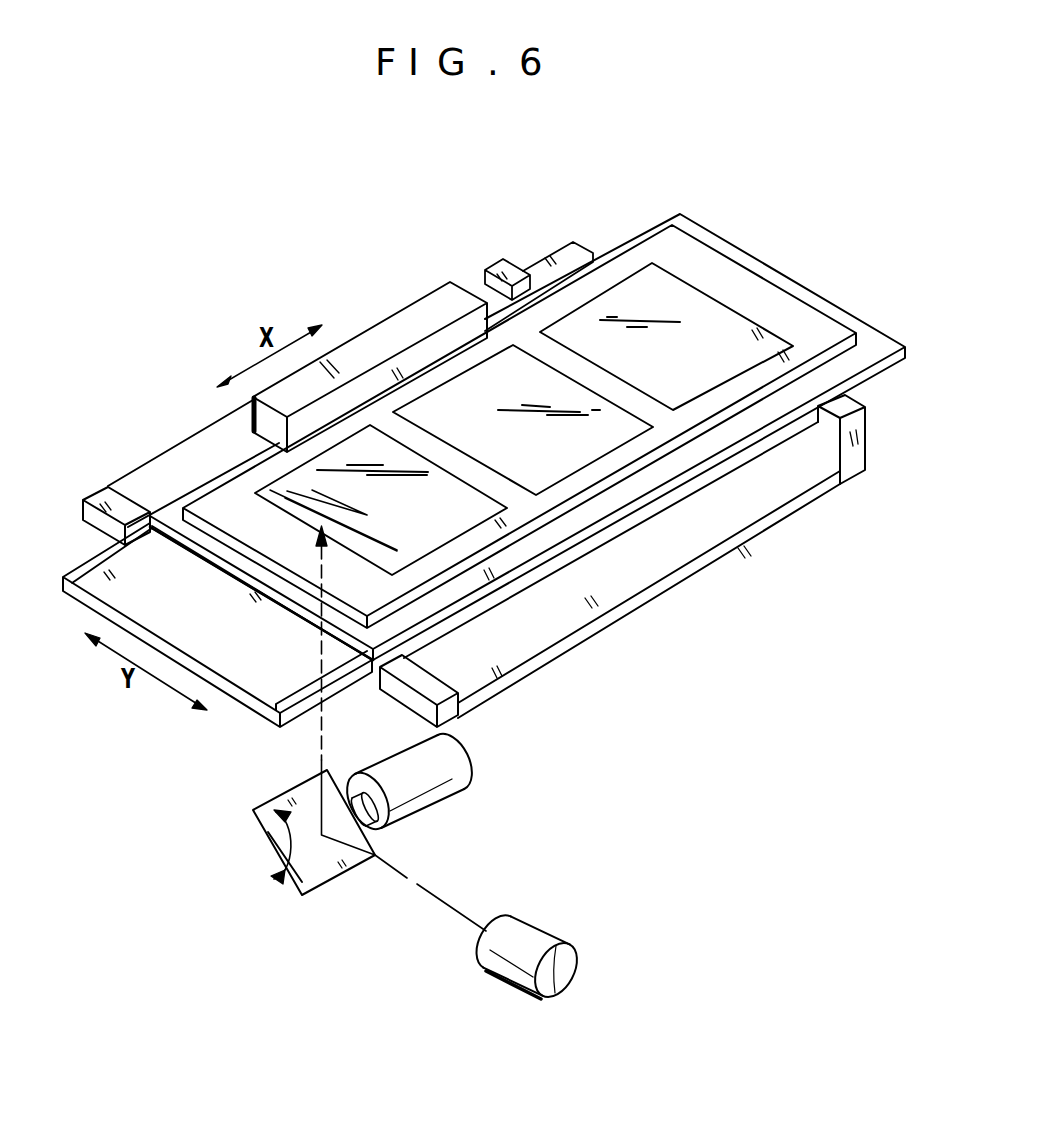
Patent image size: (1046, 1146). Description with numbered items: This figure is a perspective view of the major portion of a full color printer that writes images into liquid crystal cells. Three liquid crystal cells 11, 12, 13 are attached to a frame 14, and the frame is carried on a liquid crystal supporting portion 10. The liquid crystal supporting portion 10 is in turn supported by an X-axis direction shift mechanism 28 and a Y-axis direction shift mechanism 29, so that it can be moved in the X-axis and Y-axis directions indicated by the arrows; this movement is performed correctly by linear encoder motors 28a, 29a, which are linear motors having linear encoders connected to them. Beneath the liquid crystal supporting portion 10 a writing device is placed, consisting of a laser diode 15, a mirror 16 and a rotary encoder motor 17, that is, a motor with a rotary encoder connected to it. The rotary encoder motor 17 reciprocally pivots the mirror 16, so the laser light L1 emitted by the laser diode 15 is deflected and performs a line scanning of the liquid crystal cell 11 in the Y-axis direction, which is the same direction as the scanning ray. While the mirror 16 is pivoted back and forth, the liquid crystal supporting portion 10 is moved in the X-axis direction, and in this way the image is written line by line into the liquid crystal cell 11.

The liquid crystal supporting portion 10 is at (877, 344).
The liquid crystal cell 11 is at (312, 467).
The liquid crystal cell 12 is at (475, 378).
The liquid crystal cell 13 is at (612, 300).
The frame 14 is at (745, 262).
The laser diode 15 is at (545, 940).
The mirror 16 is at (346, 870).
The rotary encoder motor 17 is at (433, 796).
The X-axis direction shift mechanism 28 is at (103, 588).
The linear encoder motor 28a is at (373, 337).
The Y-axis direction shift mechanism 29 is at (634, 591).
The linear encoder motor 29a is at (857, 440).
The laser light L1 is at (323, 723).